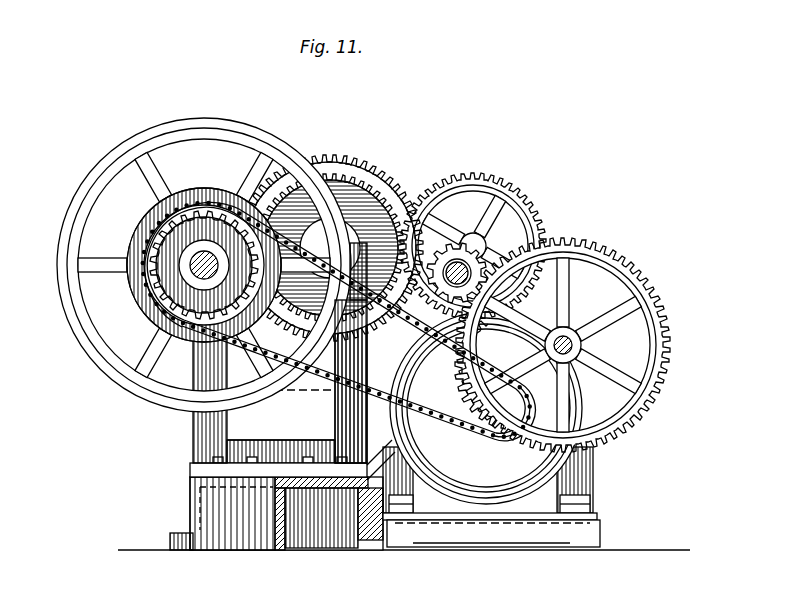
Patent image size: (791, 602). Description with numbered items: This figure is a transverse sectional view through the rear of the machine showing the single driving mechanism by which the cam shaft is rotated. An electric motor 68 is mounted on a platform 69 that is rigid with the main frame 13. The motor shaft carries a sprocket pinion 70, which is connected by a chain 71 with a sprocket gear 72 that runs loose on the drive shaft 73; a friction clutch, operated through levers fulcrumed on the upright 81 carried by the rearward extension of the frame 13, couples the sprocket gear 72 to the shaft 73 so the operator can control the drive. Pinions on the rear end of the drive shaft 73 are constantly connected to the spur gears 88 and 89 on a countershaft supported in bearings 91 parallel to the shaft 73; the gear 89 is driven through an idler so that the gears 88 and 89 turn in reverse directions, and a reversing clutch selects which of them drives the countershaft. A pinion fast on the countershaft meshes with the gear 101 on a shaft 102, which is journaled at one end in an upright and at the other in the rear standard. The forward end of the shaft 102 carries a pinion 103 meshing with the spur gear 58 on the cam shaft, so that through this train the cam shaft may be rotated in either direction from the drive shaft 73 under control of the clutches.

The main frame 13 is at (302, 508).
The spur gear 58 is at (657, 398).
The electric motor 68 is at (486, 408).
The platform 69 is at (571, 530).
The sprocket pinion 70 is at (456, 424).
The chain 71 is at (304, 389).
The sprocket gear 72 is at (205, 208).
The drive shaft 73 is at (192, 260).
The upright 81 is at (202, 444).
The spur gear 88 is at (367, 163).
The spur gear 89 is at (397, 173).
The bearings 91 is at (357, 247).
The gear 101 is at (526, 194).
The shaft 102 is at (478, 262).
The pinion 103 is at (458, 262).